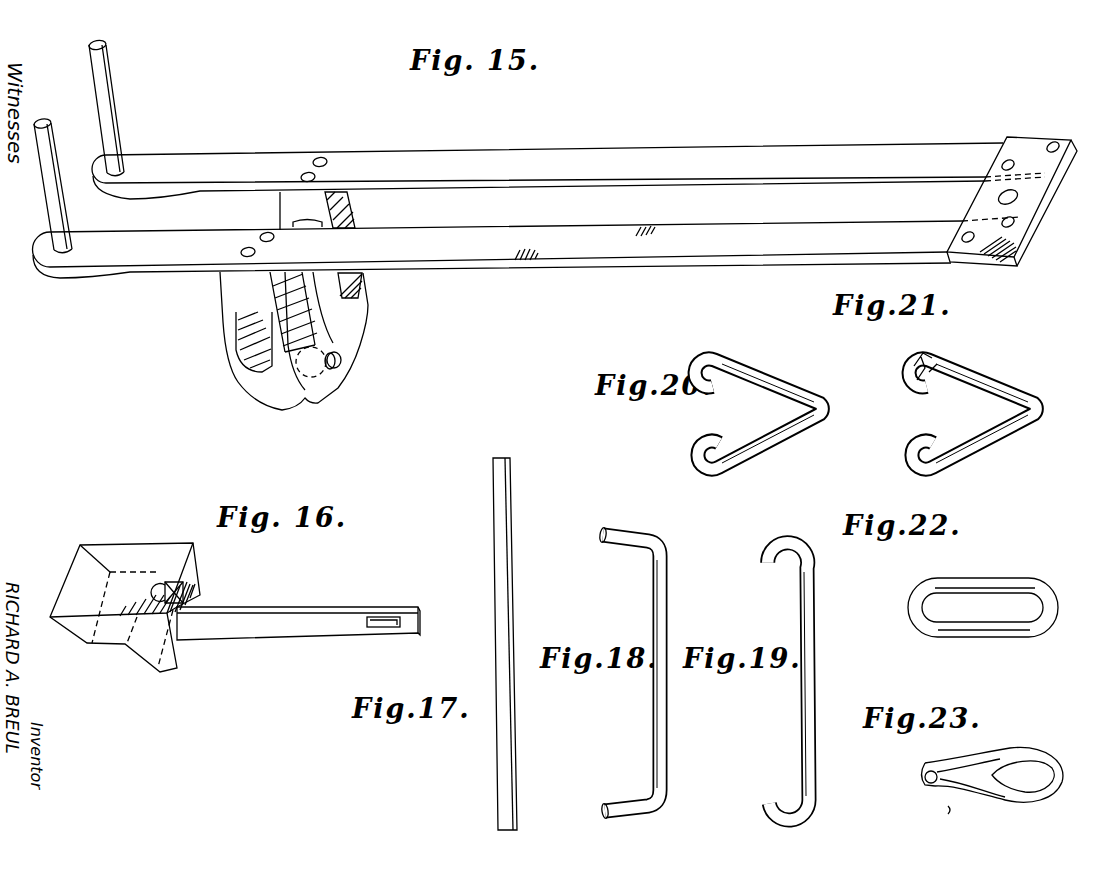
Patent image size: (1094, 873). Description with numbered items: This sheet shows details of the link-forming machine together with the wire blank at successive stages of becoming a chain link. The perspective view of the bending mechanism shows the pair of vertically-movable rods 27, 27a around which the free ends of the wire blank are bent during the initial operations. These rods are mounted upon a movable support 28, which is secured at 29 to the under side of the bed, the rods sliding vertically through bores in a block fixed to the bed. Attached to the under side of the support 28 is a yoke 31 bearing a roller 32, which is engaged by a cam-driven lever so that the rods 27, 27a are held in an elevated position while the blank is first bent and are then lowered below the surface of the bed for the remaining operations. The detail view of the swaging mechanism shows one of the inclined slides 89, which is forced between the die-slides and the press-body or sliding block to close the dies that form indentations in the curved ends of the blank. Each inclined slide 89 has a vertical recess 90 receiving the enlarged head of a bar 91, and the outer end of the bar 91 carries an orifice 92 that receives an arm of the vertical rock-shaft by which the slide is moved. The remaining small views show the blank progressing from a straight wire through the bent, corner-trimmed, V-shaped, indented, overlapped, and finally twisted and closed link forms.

In FIG. 15, the vertically-movable rod 27 is at (53, 162).
In FIG. 15, the vertically-movable rod 27a is at (118, 94).
In FIG. 15, the movable support 28 is at (539, 210).
In FIG. 15, the securing point 29 is at (978, 196).
In FIG. 15, the yoke 31 is at (294, 301).
In FIG. 15, the roller 32 is at (312, 378).
In FIG. 16, the inclined slide 89 is at (125, 607).
In FIG. 16, the vertical recess 90 is at (178, 594).
In FIG. 16, the bar 91 is at (298, 623).
In FIG. 16, the orifice 92 is at (386, 617).